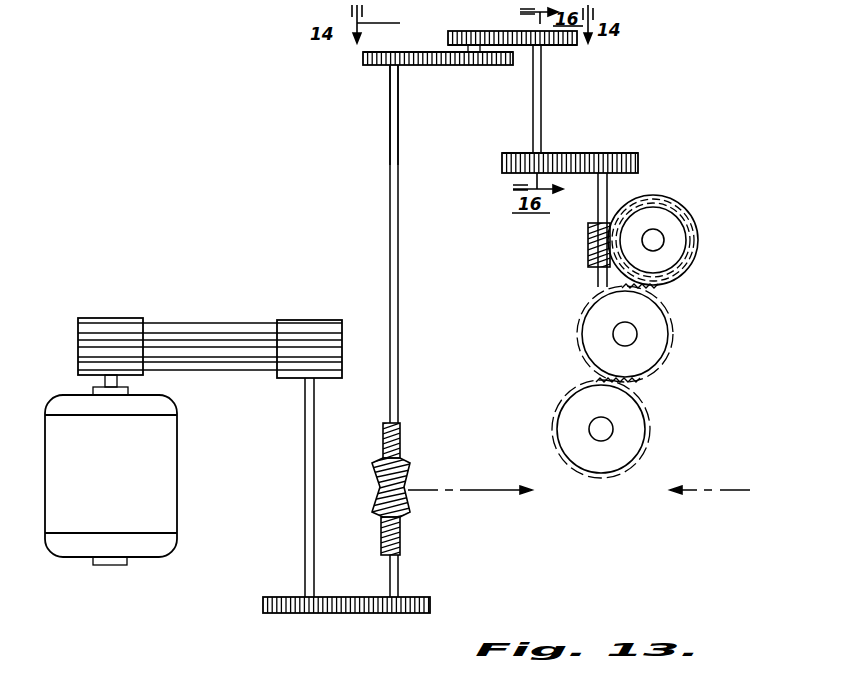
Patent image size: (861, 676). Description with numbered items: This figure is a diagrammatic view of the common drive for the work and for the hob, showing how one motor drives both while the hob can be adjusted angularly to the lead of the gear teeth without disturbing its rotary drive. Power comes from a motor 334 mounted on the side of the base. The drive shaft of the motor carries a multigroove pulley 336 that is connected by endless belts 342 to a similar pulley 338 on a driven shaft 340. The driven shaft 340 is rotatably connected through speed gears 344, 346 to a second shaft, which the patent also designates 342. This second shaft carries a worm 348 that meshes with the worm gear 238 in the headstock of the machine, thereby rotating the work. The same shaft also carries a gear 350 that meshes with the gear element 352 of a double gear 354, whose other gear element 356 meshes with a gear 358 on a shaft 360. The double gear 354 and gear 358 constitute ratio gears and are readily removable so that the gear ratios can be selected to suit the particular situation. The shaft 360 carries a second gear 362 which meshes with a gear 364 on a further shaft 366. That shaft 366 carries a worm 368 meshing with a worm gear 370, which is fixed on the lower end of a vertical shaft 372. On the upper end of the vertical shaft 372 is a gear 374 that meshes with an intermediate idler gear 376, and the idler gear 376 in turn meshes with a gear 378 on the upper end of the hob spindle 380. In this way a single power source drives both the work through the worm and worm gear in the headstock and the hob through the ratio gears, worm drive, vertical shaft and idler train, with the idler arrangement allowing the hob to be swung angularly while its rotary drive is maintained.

The motor 334 is at (165, 485).
The multigroove pulley 336 is at (118, 318).
The pulley 338 is at (332, 308).
The driven shaft 340 is at (314, 452).
The endless belts 342 is at (235, 340).
The speed gear 344 is at (292, 613).
The speed gear 346 is at (413, 613).
The worm 348 is at (410, 472).
The worm gear 238 is at (400, 540).
The gear 350 is at (417, 65).
The gear element 352 is at (453, 65).
The double gear 354 is at (433, 49).
The gear element 356 is at (467, 31).
The gear 358 is at (560, 45).
The shaft 360 is at (541, 100).
The second gear 362 is at (502, 163).
The gear 364 is at (622, 153).
The shaft 366 is at (607, 185).
The worm 368 is at (588, 245).
The worm gear 370 is at (680, 275).
The vertical shaft 372 is at (660, 226).
The gear 374 is at (698, 240).
The intermediate idler gear 376 is at (668, 342).
The gear 378 is at (645, 433).
The hob spindle 380 is at (612, 402).